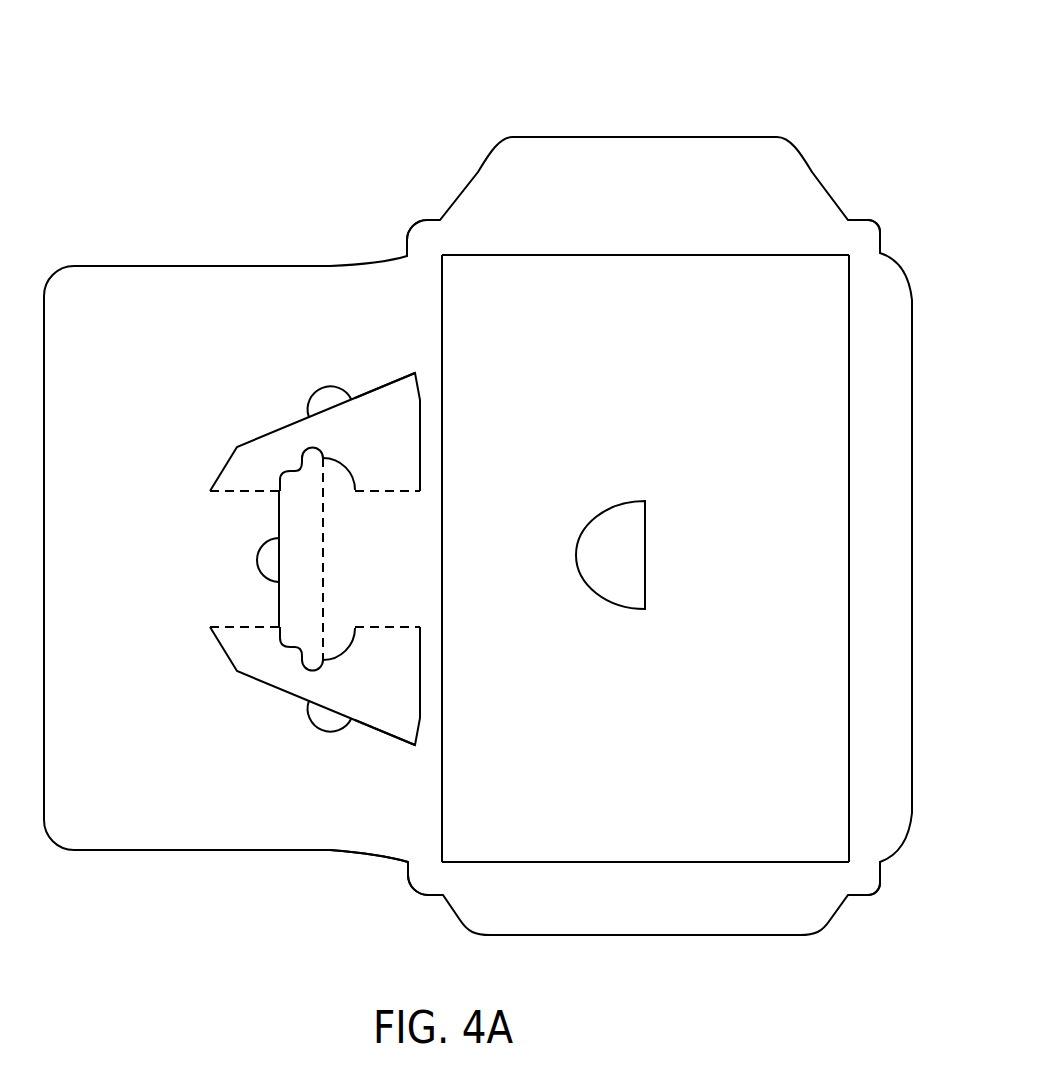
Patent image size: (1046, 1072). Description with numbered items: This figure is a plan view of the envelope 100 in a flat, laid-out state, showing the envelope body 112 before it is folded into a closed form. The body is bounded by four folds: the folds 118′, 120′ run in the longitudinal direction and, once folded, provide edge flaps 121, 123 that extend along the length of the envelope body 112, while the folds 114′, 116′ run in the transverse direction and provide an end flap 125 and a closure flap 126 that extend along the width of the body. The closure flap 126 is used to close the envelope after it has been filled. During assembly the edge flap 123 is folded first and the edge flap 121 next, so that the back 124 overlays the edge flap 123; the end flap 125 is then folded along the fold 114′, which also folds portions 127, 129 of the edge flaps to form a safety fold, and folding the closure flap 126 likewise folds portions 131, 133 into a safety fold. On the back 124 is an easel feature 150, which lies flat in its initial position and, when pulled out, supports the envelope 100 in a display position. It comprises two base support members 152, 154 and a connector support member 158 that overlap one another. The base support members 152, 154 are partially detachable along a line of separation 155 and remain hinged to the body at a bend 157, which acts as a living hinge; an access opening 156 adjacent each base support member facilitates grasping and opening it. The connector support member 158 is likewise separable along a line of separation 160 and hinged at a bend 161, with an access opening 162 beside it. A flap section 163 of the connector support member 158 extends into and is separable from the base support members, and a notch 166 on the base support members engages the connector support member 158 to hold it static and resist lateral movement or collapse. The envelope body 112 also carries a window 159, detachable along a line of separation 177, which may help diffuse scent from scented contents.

The envelope 100 is at (478, 479).
The envelope body 112 is at (365, 203).
The fold 114′ is at (648, 860).
The fold 116′ is at (647, 256).
The fold 118′ is at (442, 466).
The fold 120′ is at (850, 560).
The edge flap 121 is at (408, 834).
The edge flap 123 is at (895, 622).
The back 124 is at (127, 278).
The end flap 125 is at (642, 932).
The closure flap 126 is at (642, 148).
The portion of edge flap 127 is at (428, 883).
The portion of edge flap 129 is at (858, 882).
The portion of edge flap 131 is at (428, 232).
The portion of edge flap 133 is at (858, 235).
The easel feature 150 is at (177, 769).
The base support member 152 is at (315, 406).
The base support member 154 is at (315, 711).
The line of separation 155 is at (375, 385).
The access opening 156 is at (330, 386).
The bend 157 is at (389, 493).
The connector support member 158 is at (225, 610).
The window 159 is at (578, 556).
The line of separation 160 is at (278, 523).
The bend 161 is at (324, 572).
The access opening 162 is at (258, 558).
The flap section 163 is at (343, 477).
The notch 166 is at (305, 447).
The line of separation 177 is at (642, 612).